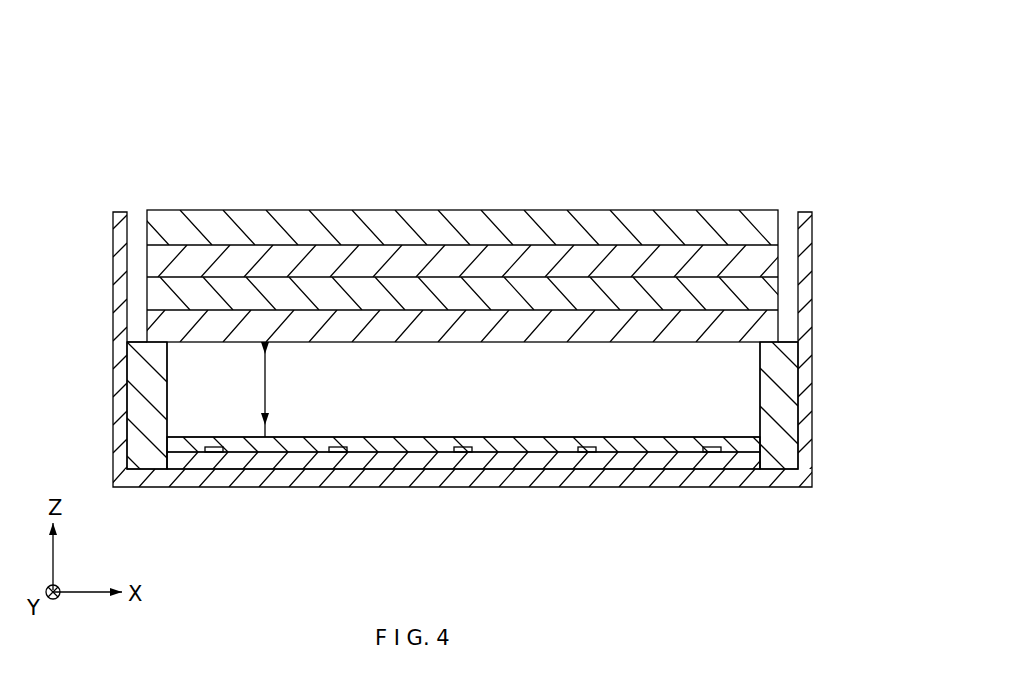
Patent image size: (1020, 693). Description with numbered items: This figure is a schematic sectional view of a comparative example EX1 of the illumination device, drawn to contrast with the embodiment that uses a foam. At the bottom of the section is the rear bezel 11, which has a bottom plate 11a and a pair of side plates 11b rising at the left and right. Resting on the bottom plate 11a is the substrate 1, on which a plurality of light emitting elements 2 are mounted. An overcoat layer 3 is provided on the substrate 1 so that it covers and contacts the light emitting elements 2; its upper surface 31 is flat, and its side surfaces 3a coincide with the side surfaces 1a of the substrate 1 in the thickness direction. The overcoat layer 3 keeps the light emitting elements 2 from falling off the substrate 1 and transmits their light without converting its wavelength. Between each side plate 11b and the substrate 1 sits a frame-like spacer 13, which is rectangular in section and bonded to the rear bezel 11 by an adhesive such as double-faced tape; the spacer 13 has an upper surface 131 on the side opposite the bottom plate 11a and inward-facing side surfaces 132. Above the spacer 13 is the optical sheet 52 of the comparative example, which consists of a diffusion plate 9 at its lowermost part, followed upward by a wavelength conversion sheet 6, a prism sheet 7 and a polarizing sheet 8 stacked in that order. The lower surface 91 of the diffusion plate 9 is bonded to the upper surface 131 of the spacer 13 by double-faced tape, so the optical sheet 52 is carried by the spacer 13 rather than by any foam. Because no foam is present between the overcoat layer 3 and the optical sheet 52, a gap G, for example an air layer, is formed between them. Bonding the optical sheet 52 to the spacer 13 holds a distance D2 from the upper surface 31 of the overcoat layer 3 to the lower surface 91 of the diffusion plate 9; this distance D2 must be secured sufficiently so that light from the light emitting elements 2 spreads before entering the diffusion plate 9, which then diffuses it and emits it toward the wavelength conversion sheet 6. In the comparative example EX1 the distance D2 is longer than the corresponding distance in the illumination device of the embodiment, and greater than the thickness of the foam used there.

The substrate 1 is at (636, 462).
The side surfaces of the substrate 1a is at (165, 463).
The light emitting elements 2 is at (717, 453).
The overcoat layer 3 is at (674, 452).
The side surfaces of the overcoat layer 3a is at (165, 447).
The upper surface of the overcoat layer 31 is at (304, 436).
The wavelength conversion sheet 6 is at (766, 294).
The prism sheet 7 is at (766, 258).
The polarizing sheet 8 is at (766, 228).
The diffusion plate 9 is at (766, 332).
The rear bezel 11 is at (108, 472).
The bottom plate 11a is at (576, 478).
The side plates 11b is at (120, 232).
The spacer 13 is at (140, 405).
The upper surface of the spacer 131 is at (147, 345).
The side surfaces of the spacer 132 is at (172, 397).
The optical sheet 52 is at (850, 222).
The lower surface of the diffusion plate 91 is at (152, 353).
The gap G is at (185, 420).
The distance D2 is at (248, 389).
The comparative example EX1 is at (818, 152).